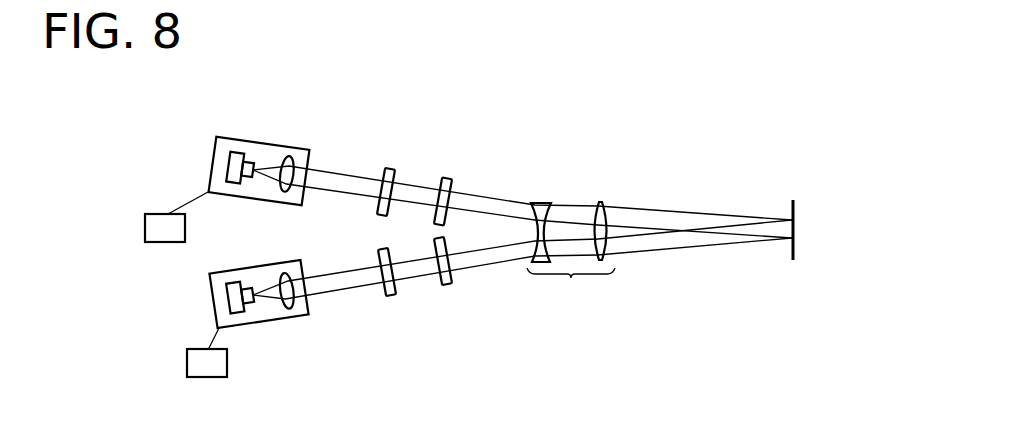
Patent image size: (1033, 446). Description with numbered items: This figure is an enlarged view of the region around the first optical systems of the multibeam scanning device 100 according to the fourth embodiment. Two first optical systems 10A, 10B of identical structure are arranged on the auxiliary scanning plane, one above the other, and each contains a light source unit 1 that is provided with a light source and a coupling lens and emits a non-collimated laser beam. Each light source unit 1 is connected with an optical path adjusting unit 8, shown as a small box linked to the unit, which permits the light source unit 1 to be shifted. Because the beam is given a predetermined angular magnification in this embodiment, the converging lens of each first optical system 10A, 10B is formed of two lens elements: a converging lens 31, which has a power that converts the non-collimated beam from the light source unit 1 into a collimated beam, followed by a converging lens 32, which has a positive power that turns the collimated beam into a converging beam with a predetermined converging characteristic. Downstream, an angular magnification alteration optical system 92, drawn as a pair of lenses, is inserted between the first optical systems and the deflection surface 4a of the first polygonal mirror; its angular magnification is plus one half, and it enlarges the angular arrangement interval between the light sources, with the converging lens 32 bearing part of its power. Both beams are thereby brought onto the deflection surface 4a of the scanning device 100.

The light source unit 1 is at (265, 140).
The optical path adjusting unit 8 is at (158, 241).
The first optical system 10A is at (357, 140).
The first optical system 10B is at (339, 326).
The converging lens 31 is at (395, 175).
The converging lens 32 is at (451, 182).
The angular magnification alteration optical system 92 is at (571, 259).
The multibeam scanning device 100 is at (645, 125).
The deflection surface 4a is at (797, 208).